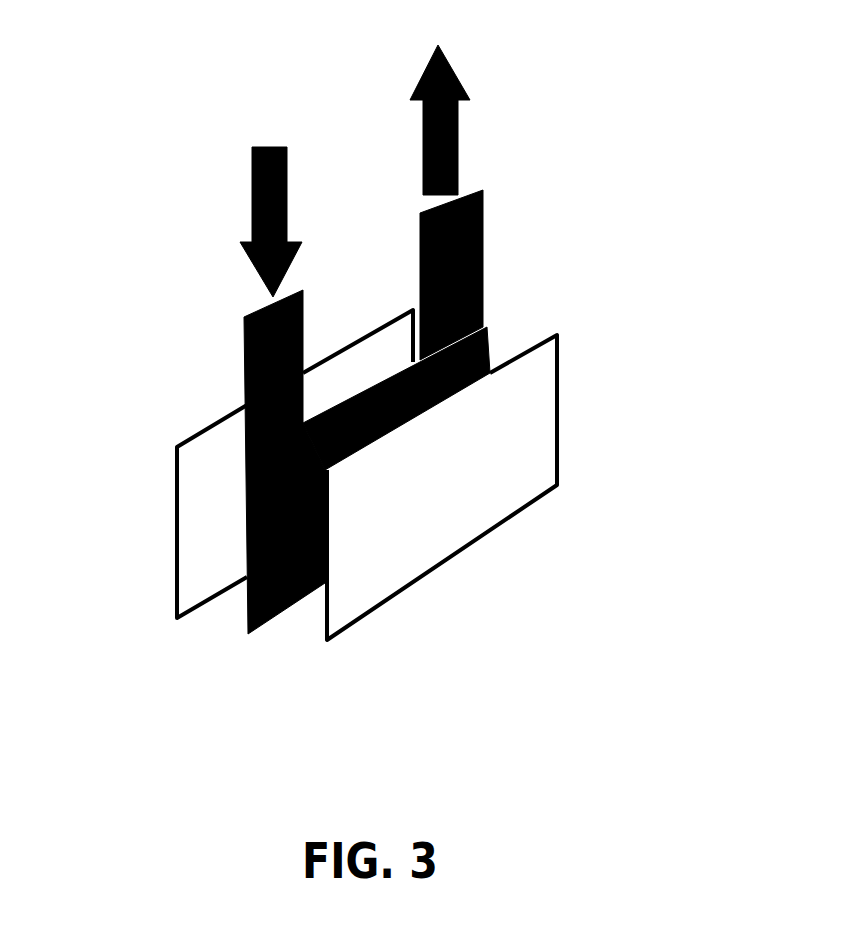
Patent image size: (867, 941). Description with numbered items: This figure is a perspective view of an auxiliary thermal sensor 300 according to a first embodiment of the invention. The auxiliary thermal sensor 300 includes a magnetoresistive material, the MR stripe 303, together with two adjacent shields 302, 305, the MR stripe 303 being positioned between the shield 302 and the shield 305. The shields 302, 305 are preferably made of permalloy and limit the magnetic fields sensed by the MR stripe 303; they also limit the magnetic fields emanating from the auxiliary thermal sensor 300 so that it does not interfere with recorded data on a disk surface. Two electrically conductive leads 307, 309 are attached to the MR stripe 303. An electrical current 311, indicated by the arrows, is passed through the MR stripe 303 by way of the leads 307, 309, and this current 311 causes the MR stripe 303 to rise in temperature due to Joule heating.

The auxiliary thermal sensor 300 is at (758, 52).
The shield 302 is at (532, 400).
The MR stripe 303 is at (487, 330).
The shield 305 is at (197, 460).
The electrically conductive lead 307 is at (480, 190).
The electrically conductive lead 309 is at (244, 337).
The electrical current 311 is at (252, 167).